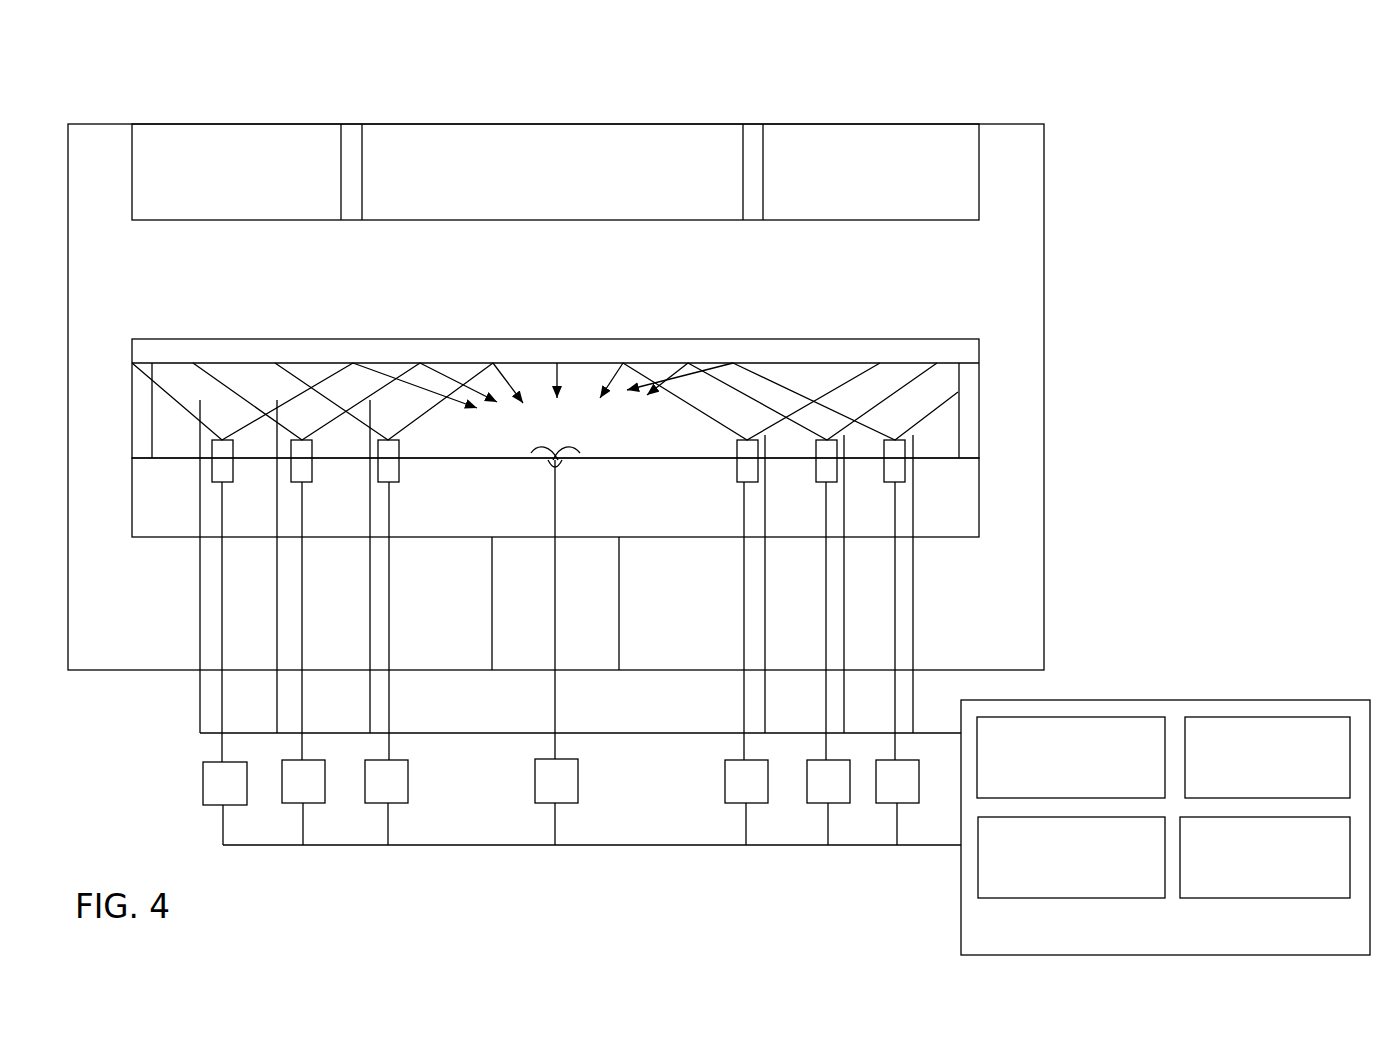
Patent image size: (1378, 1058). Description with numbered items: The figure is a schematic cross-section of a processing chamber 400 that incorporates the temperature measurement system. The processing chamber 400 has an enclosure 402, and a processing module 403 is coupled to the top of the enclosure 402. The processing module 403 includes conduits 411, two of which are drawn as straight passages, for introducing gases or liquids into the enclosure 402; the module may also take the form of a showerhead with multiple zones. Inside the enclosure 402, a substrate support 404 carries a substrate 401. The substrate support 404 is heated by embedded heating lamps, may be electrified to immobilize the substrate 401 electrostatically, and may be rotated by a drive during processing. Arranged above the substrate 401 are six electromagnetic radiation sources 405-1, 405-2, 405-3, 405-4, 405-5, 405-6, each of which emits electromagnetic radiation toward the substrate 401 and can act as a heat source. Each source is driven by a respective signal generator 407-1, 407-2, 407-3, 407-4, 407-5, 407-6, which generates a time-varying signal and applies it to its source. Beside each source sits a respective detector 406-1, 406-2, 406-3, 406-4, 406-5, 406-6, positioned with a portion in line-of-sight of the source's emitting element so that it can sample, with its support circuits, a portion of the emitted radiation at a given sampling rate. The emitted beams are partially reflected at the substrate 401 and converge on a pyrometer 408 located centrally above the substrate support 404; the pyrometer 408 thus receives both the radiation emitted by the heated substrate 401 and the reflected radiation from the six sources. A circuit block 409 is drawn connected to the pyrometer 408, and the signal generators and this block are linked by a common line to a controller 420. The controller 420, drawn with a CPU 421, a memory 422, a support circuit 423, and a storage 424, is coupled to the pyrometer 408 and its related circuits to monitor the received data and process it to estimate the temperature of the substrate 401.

The processing chamber 400 is at (1048, 108).
The substrate 401 is at (980, 353).
The enclosure 402 is at (1040, 265).
The processing module 403 is at (980, 210).
The substrate support 404 is at (980, 480).
The electromagnetic radiation source 405-1 is at (228, 482).
The electromagnetic radiation source 405-2 is at (307, 482).
The electromagnetic radiation source 405-3 is at (394, 482).
The electromagnetic radiation source 405-4 is at (742, 482).
The electromagnetic radiation source 405-5 is at (823, 482).
The electromagnetic radiation source 405-6 is at (897, 482).
The detector 406-1 is at (200, 400).
The detector 406-2 is at (277, 400).
The detector 406-3 is at (370, 400).
The detector 406-4 is at (765, 435).
The detector 406-5 is at (844, 435).
The detector 406-6 is at (913, 435).
The signal generator 407-1 is at (228, 805).
The signal generator 407-2 is at (308, 803).
The signal generator 407-3 is at (392, 803).
The signal generator 407-4 is at (755, 803).
The signal generator 407-5 is at (838, 803).
The signal generator 407-6 is at (905, 803).
The pyrometer 408 is at (563, 462).
The light source driver circuit 409 is at (563, 803).
The conduit 411 is at (357, 124).
The controller 420 is at (1107, 941).
The CPU 421 is at (1085, 752).
The memory 422 is at (1282, 789).
The support circuit 423 is at (1137, 887).
The storage 424 is at (1277, 887).